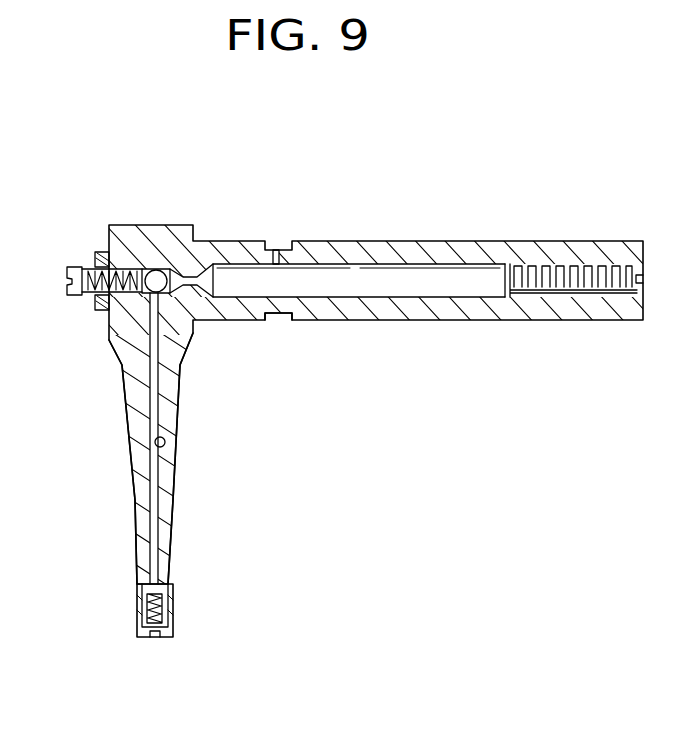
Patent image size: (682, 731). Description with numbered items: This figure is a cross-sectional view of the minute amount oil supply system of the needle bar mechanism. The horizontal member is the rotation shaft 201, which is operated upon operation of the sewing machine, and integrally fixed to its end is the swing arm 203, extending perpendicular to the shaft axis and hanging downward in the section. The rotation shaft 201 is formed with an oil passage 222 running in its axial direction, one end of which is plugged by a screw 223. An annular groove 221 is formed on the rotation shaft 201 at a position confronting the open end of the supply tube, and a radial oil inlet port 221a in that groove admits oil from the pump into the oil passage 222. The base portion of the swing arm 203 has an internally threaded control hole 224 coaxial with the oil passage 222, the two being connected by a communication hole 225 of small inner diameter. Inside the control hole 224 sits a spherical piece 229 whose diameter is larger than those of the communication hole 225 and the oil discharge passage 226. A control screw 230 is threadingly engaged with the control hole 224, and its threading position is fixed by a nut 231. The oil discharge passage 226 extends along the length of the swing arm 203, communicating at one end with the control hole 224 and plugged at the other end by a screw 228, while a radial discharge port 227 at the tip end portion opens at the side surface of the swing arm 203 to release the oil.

The rotation shaft 201 is at (387, 247).
The swing arm 203 is at (139, 395).
The annular groove 221 is at (279, 317).
The radial oil inlet port 221a is at (278, 250).
The oil passage 222 is at (445, 295).
The screw 223 is at (537, 277).
The control hole 224 is at (124, 268).
The communication hole 225 is at (199, 274).
The oil discharge passage 226 is at (165, 441).
The radial discharge port 227 is at (168, 587).
The screw 228 is at (164, 638).
The spherical piece 229 is at (158, 278).
The control screw 230 is at (80, 267).
The nut 231 is at (98, 310).